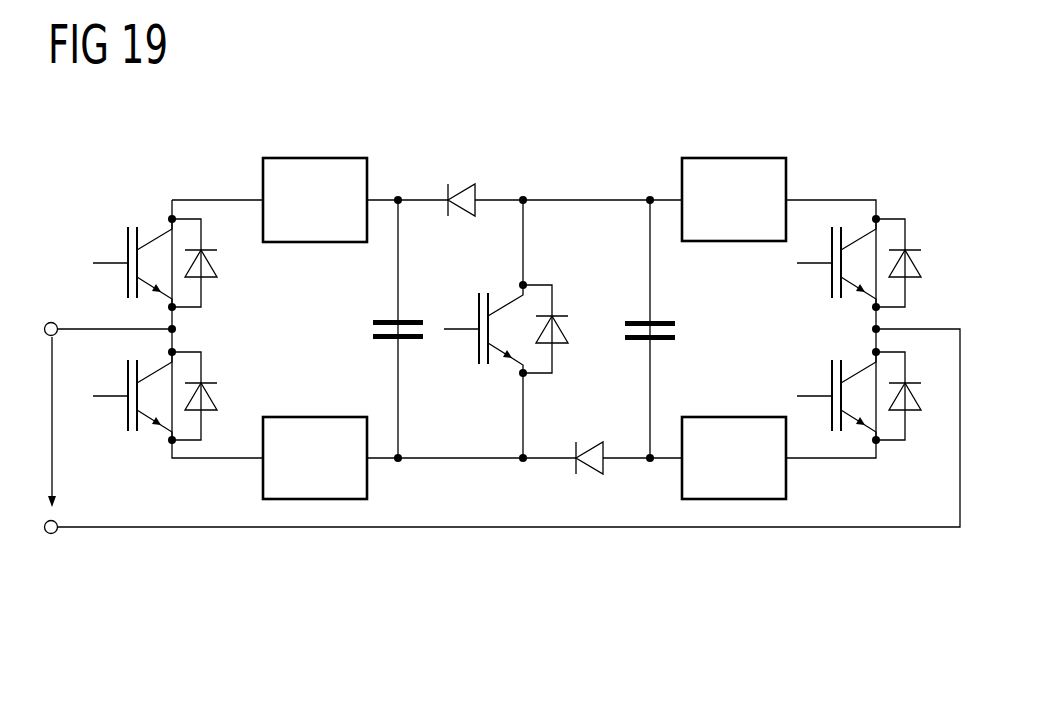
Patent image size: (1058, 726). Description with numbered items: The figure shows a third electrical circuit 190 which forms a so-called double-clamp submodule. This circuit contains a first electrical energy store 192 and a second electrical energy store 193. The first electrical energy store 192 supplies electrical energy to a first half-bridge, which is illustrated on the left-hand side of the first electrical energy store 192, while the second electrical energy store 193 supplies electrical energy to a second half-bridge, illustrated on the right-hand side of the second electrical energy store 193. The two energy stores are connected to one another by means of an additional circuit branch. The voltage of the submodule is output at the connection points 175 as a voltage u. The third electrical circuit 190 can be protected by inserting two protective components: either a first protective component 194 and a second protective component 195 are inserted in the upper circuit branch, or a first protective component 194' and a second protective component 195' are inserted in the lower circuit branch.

The third electrical circuit 190 is at (839, 76).
The connection points 175 is at (56, 323).
The first electrical energy store 192 is at (383, 319).
The second electrical energy store 193 is at (639, 320).
The first protective component 194 is at (315, 158).
The first protective component 194' is at (315, 511).
The second protective component 195 is at (734, 158).
The second protective component 195' is at (734, 511).